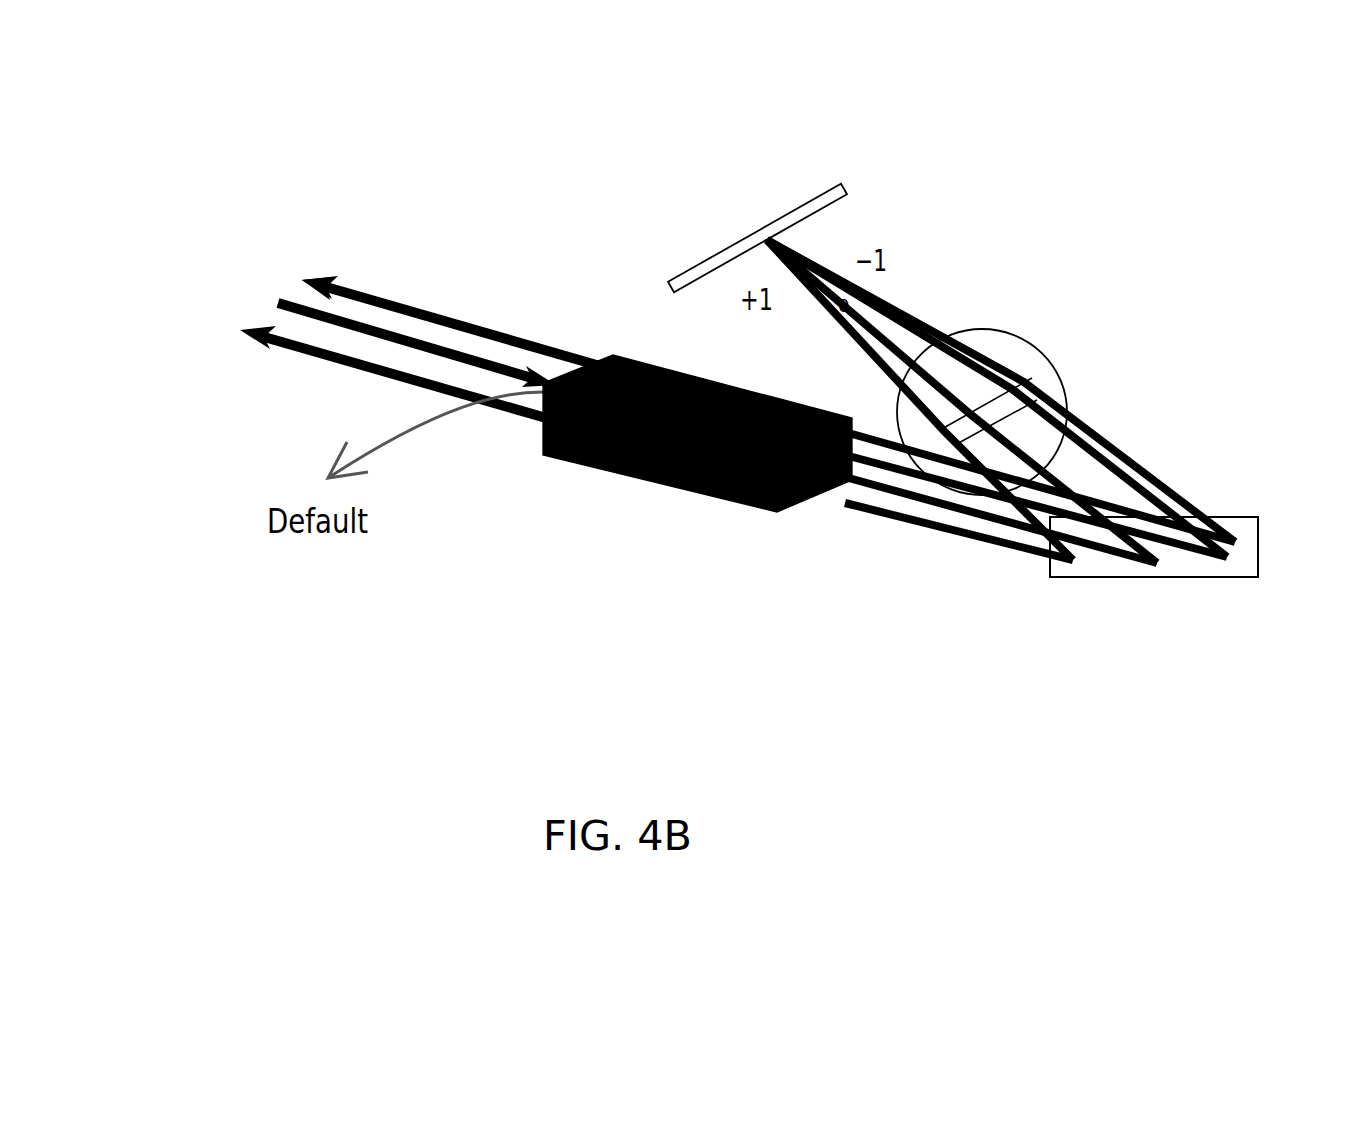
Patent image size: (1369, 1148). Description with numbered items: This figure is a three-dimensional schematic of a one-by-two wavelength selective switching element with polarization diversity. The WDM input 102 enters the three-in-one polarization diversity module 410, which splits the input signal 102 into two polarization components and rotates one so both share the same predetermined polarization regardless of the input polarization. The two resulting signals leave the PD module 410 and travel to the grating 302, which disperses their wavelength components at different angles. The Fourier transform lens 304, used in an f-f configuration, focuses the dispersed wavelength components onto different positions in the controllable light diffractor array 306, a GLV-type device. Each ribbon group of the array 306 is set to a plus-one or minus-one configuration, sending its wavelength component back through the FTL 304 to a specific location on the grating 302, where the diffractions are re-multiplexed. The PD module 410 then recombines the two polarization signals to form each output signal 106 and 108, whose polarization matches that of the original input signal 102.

The WDM input 102 is at (304, 326).
The WDM output (Output 1) 106 is at (308, 374).
The WDM output (Output 2) 108 is at (451, 267).
The grating 302 is at (1200, 569).
The Fourier transform lens 304 is at (1033, 387).
The controllable light diffractor array 306 is at (743, 235).
The 3-in-1 polarization diversity module 410 is at (682, 474).